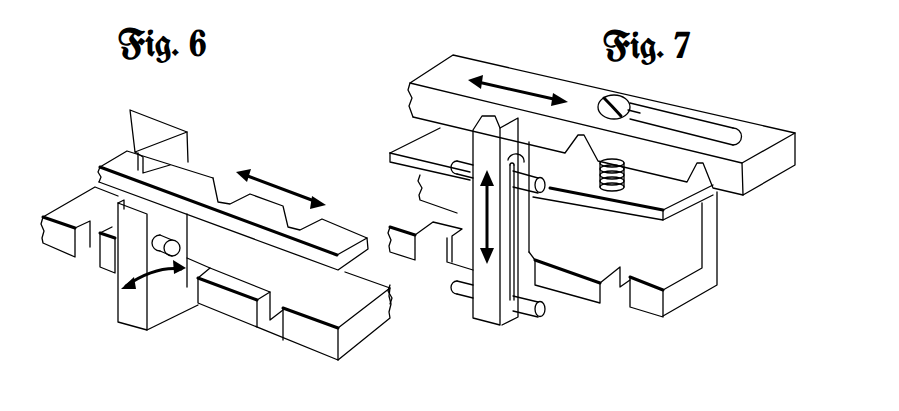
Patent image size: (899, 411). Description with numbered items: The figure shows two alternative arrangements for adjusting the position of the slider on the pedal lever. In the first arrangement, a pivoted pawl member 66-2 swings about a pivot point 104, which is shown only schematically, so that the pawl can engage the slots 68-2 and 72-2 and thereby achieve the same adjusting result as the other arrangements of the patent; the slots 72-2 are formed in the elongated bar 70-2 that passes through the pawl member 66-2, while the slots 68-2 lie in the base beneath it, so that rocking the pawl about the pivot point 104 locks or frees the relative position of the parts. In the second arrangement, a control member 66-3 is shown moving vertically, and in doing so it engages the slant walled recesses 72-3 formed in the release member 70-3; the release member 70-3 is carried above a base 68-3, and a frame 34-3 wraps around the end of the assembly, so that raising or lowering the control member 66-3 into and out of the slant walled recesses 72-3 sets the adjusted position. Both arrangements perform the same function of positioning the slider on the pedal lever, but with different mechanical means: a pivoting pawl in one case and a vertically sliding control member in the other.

In FIG. 6, the rack bar 70-2 is at (123, 162).
In FIG. 6, the slot 72-2 is at (221, 190).
In FIG. 6, the pivoted pawl member 66-2 is at (135, 320).
In FIG. 6, the slot 68-2 is at (275, 327).
In FIG. 6, the pivot point 104 is at (160, 253).
In FIG. 7, the release member 70-3 is at (515, 72).
In FIG. 7, the slant walled recesses 72-3 is at (705, 167).
In FIG. 7, the control member 66-3 is at (490, 313).
In FIG. 7, the base 68-3 is at (620, 295).
In FIG. 7, the carriage frame 34-3 is at (692, 245).